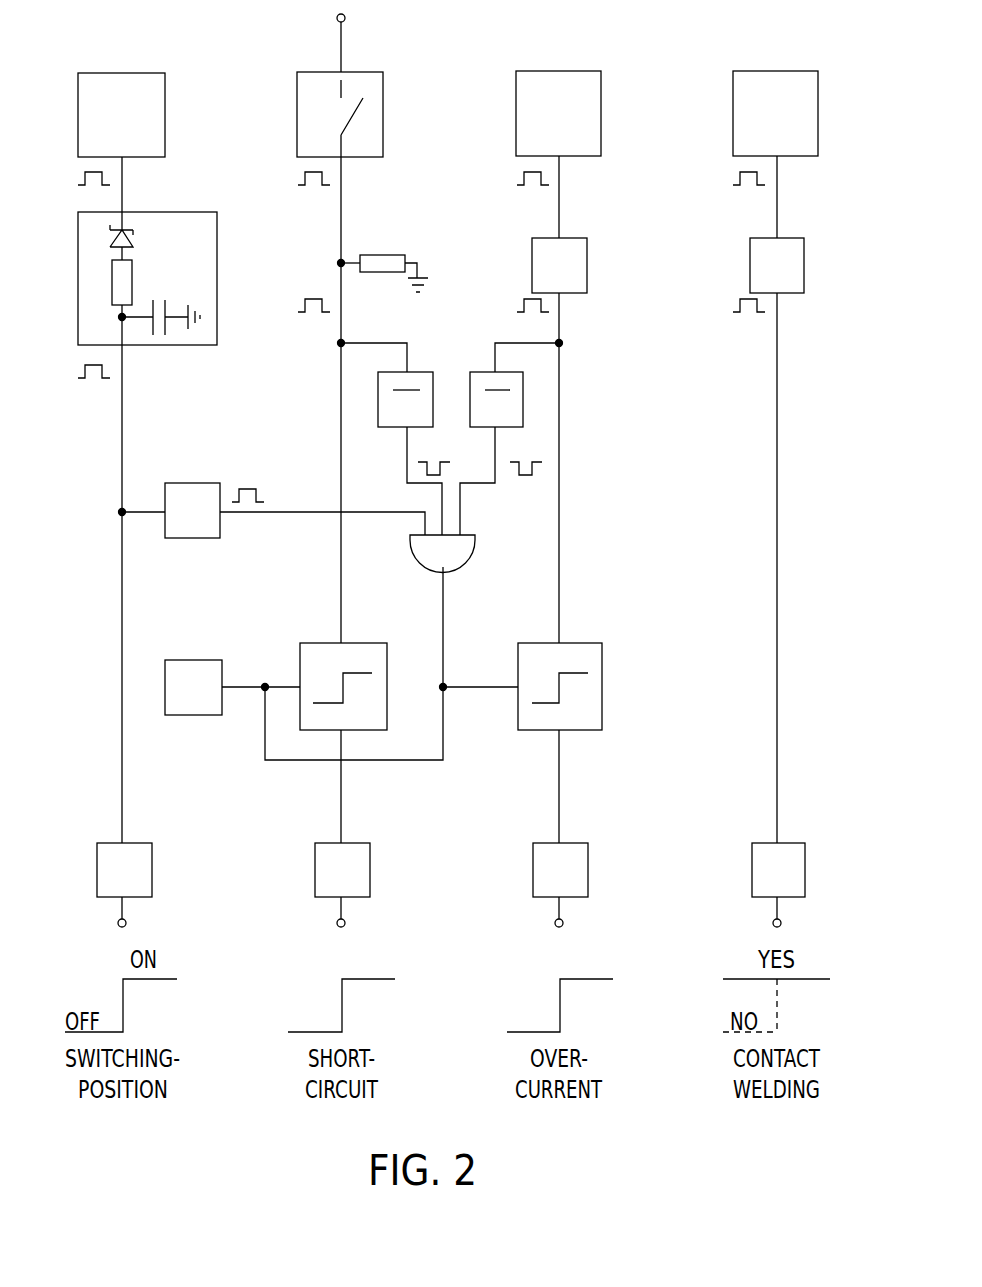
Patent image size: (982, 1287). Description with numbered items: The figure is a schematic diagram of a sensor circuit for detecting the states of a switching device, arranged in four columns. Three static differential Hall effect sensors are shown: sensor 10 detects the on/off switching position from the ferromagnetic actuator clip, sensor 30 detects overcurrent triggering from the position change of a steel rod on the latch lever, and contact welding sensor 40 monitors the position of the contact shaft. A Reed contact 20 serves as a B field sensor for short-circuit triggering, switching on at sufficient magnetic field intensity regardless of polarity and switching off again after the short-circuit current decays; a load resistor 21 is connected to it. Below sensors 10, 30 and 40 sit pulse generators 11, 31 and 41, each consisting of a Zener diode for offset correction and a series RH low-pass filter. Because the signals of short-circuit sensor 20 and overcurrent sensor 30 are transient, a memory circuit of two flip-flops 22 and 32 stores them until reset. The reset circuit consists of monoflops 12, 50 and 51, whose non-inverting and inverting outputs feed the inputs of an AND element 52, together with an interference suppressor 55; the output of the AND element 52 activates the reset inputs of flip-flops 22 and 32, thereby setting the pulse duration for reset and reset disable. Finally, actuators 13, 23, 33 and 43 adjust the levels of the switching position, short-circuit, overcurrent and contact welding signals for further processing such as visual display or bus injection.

The static differential Hall effect sensor 10 is at (165, 122).
The pulse generator 11 is at (217, 262).
The monoflop 12 is at (203, 483).
The actuator 13 is at (152, 872).
The Reed contact 20 is at (383, 120).
The load resistor 21 is at (377, 255).
The flip-flop 22 is at (387, 688).
The actuator 23 is at (370, 872).
The static differential Hall effect sensor 30 is at (601, 121).
The pulse generator 31 is at (532, 267).
The flip-flop 32 is at (602, 682).
The actuator 33 is at (588, 872).
The contact welding sensor 40 is at (733, 133).
The pulse generator 41 is at (750, 263).
The actuator 43 is at (805, 872).
The monoflop 50 is at (433, 383).
The monoflop 51 is at (470, 385).
The AND element 52 is at (468, 555).
The interference suppressor 55 is at (202, 660).